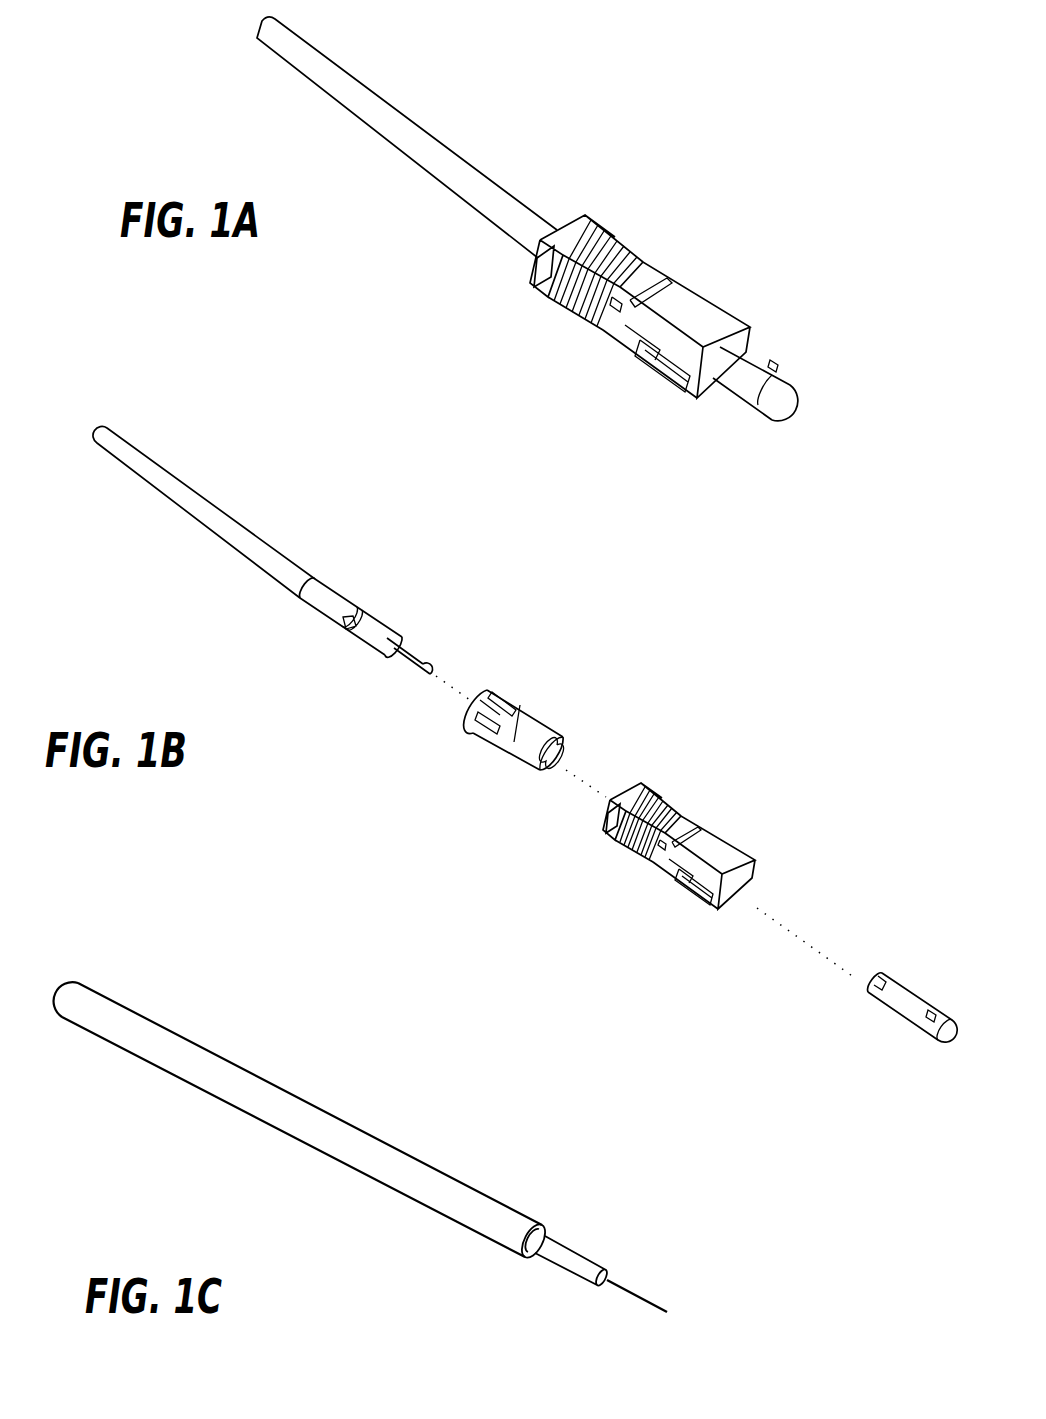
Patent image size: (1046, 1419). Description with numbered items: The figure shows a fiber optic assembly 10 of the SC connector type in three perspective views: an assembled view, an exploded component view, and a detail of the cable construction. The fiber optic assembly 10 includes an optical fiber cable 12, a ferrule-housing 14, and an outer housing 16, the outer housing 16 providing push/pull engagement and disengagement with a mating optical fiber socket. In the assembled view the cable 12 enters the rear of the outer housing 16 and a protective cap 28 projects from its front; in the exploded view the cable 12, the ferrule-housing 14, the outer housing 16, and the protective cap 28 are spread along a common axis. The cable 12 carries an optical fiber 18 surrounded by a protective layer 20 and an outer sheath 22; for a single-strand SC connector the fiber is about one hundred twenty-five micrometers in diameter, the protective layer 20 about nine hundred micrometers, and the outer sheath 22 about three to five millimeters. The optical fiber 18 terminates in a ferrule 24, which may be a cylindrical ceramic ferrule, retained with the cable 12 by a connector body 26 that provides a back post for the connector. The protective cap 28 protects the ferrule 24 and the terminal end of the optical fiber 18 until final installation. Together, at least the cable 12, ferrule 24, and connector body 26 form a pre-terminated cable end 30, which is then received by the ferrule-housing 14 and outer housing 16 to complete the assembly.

In FIG. 1A, the fiber optic assembly 10 is at (654, 134).
In FIG. 1B, the fiber optic assembly 10 is at (672, 650).
In FIG. 1A, the optical fiber cable 12 is at (405, 138).
In FIG. 1B, the optical fiber cable 12 is at (198, 510).
In FIG. 1C, the optical fiber cable 12 is at (512, 1153).
In FIG. 1B, the ferrule-housing 14 is at (528, 718).
In FIG. 1A, the outer housing 16 is at (618, 327).
In FIG. 1B, the outer housing 16 is at (668, 870).
In FIG. 1C, the optical fiber 18 is at (640, 1302).
In FIG. 1C, the protective layer 20 is at (575, 1276).
In FIG. 1C, the outer sheath 22 is at (373, 1157).
In FIG. 1B, the ferrule 24 is at (407, 660).
In FIG. 1B, the connector body 26 is at (350, 625).
In FIG. 1A, the protective cap 28 is at (760, 400).
In FIG. 1B, the protective cap 28 is at (888, 1002).
In FIG. 1B, the pre-terminated cable end 30 is at (410, 585).